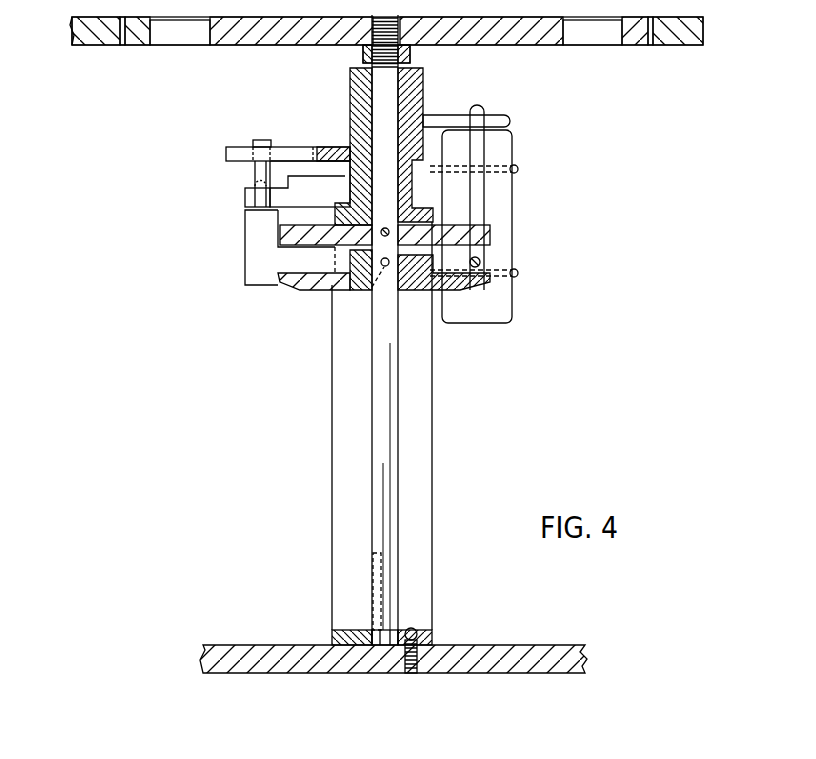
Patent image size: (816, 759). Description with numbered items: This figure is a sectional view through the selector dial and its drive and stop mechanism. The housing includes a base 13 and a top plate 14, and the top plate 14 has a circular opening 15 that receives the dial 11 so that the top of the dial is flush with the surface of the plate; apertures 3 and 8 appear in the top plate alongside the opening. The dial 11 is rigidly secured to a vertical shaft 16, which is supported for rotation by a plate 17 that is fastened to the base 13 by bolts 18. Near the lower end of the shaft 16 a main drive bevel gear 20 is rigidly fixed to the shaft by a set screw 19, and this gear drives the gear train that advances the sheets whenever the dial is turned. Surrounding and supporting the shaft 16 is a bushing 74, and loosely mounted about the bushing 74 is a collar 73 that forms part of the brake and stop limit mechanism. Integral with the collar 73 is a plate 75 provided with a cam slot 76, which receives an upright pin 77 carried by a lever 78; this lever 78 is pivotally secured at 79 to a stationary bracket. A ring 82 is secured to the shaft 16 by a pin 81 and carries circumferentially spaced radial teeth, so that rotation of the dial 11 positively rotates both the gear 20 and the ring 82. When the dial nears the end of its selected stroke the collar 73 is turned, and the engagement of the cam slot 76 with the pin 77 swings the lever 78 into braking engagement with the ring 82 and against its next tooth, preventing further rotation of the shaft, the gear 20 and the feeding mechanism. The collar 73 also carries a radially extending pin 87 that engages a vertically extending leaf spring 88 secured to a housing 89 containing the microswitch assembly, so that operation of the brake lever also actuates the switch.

The aperture in upper plate 3 is at (621, 42).
The aperture in upper plate 8 is at (206, 43).
The selector dial 11 is at (506, 40).
The base 13 is at (469, 648).
The top plate 14 is at (77, 43).
The circular opening 15 is at (122, 46).
The shaft 16 is at (385, 448).
The plate 17 is at (335, 637).
The bolts 18 is at (416, 630).
The set screw 19 is at (368, 292).
The main drive bevel gear 20 is at (298, 283).
The collar 73 is at (417, 94).
The bushing 74 is at (362, 96).
The plate 75 is at (336, 144).
The cam slot 76 is at (297, 155).
The upright pin 77 is at (272, 133).
The lever 78 is at (258, 233).
The pivot 79 is at (258, 183).
The pin 81 is at (492, 229).
The ring 82 is at (492, 240).
The radially extending pin 87 is at (448, 118).
The leaf spring 88 is at (482, 139).
The housing 89 is at (505, 188).